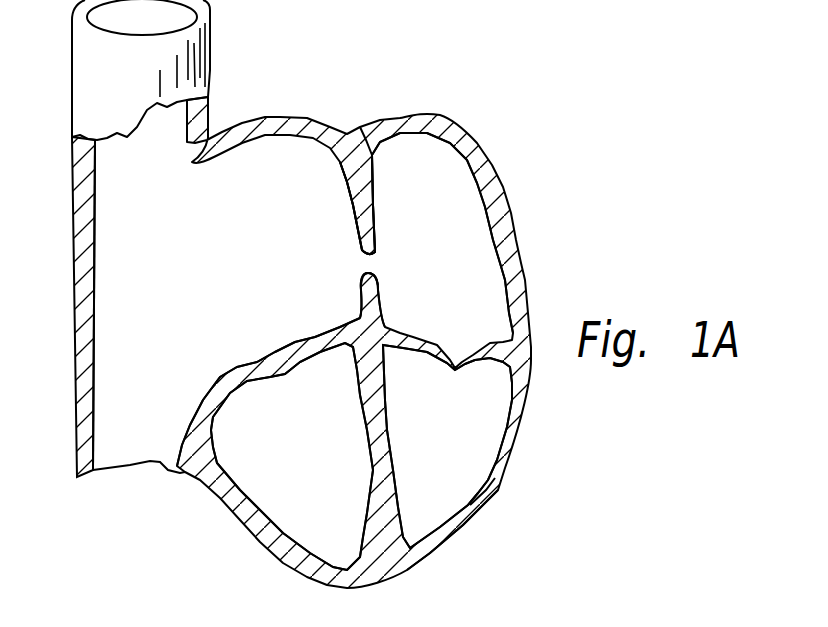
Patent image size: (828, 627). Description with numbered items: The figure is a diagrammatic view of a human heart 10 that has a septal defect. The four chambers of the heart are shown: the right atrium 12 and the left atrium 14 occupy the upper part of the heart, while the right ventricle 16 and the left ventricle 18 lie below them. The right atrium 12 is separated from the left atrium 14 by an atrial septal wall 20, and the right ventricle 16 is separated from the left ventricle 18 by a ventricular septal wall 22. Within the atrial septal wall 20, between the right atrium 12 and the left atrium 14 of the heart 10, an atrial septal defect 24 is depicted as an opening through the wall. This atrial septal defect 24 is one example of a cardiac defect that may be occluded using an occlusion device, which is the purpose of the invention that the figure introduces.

The heart 10 is at (502, 133).
The right atrium 12 is at (291, 219).
The left atrium 14 is at (434, 237).
The right ventricle 16 is at (299, 456).
The left ventricle 18 is at (436, 435).
The atrial septal wall 20 is at (311, 298).
The ventricular septal wall 22 is at (423, 501).
The atrial septal defect 24 is at (334, 267).